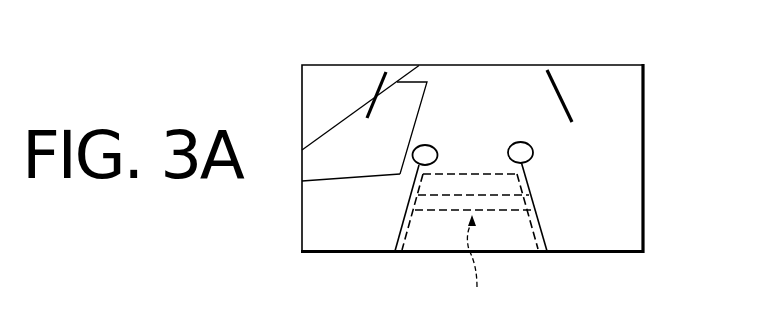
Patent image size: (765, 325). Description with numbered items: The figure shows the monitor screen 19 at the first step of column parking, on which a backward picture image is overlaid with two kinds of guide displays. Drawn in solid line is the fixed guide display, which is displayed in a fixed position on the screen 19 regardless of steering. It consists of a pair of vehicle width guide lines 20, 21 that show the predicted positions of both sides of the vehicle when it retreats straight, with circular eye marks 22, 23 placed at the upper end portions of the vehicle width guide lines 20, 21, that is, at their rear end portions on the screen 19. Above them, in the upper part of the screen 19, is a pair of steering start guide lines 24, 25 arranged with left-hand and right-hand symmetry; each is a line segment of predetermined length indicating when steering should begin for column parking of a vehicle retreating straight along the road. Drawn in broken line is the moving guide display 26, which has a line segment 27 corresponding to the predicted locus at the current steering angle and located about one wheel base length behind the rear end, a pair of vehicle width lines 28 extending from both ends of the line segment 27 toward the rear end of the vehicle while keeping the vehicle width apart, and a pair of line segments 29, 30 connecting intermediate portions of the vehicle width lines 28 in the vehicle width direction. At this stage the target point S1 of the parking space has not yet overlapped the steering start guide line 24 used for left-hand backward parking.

The screen 19 is at (645, 130).
The target point S1 is at (397, 82).
The steering start guide line 24 is at (376, 97).
The steering start guide line 25 is at (563, 103).
The circular eye mark 22 is at (412, 149).
The circular eye mark 23 is at (534, 152).
The vehicle width guide line 20 is at (405, 222).
The vehicle width guide line 21 is at (543, 222).
The line segment 27 is at (463, 173).
The vehicle width lines 28 is at (407, 234).
The line segment 29 is at (482, 197).
The line segment 30 is at (470, 209).
The moving guide display 26 is at (476, 266).